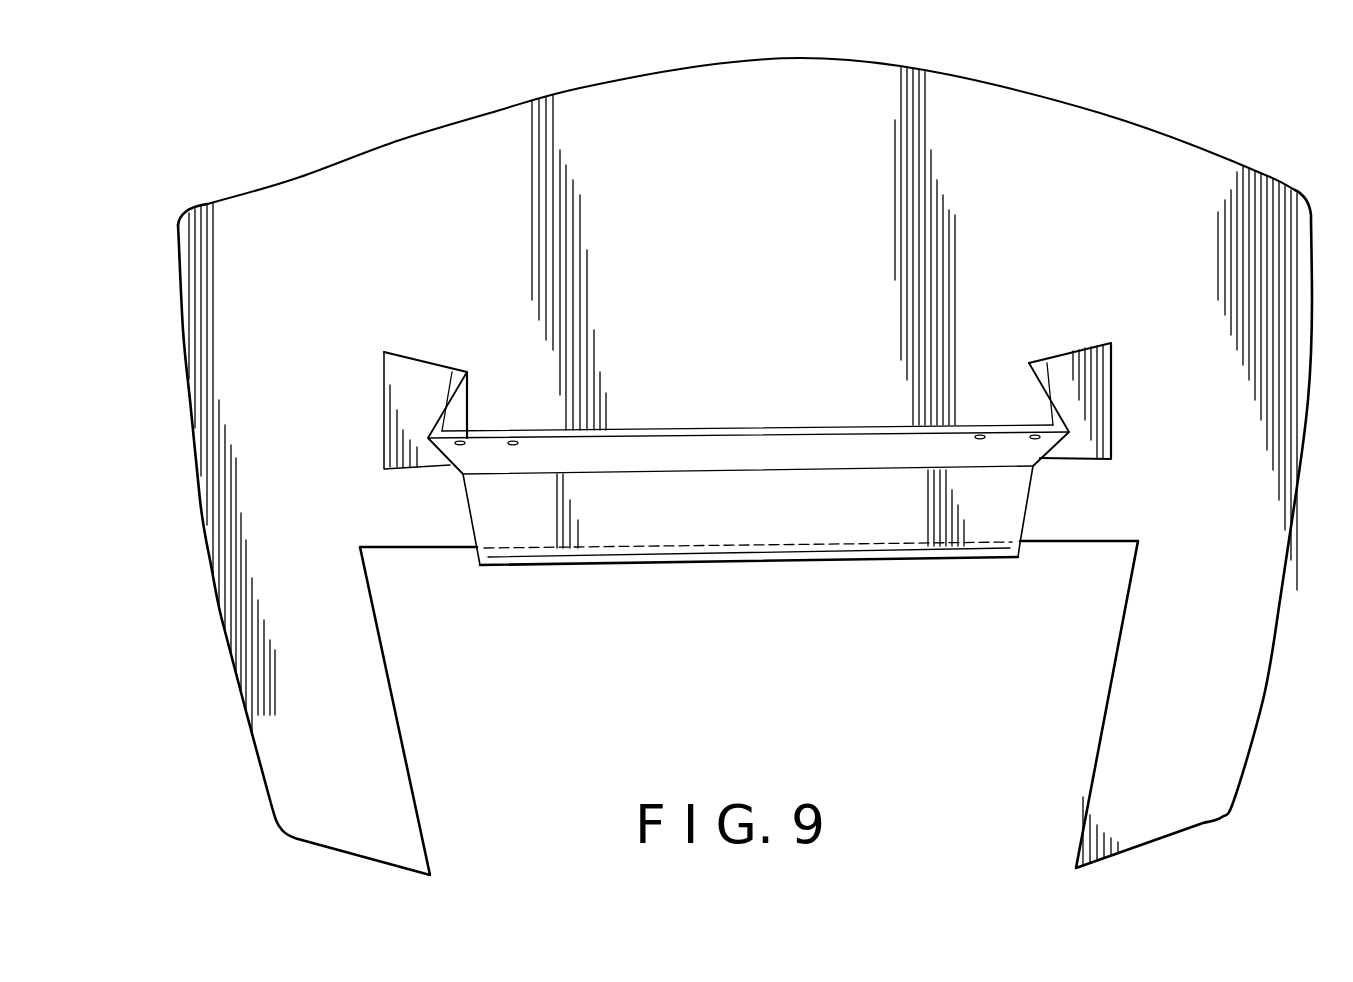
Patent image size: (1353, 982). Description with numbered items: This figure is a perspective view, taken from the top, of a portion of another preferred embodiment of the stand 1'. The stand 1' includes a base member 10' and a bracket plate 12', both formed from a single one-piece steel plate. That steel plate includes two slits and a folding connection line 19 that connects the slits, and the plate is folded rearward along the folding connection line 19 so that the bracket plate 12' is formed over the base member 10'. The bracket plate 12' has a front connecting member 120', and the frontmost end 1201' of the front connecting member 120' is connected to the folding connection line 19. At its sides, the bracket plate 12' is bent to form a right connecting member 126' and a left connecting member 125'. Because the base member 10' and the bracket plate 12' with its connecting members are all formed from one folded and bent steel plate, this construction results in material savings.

The stand 1' is at (727, 466).
The base member 10' is at (745, 466).
The bracket plate 12' is at (765, 482).
The left connecting member 125' is at (397, 394).
The right connecting member 126' is at (1116, 396).
The front connecting member 120' is at (821, 556).
The folding connection line 19 is at (668, 552).
The frontmost end 1201' is at (748, 583).